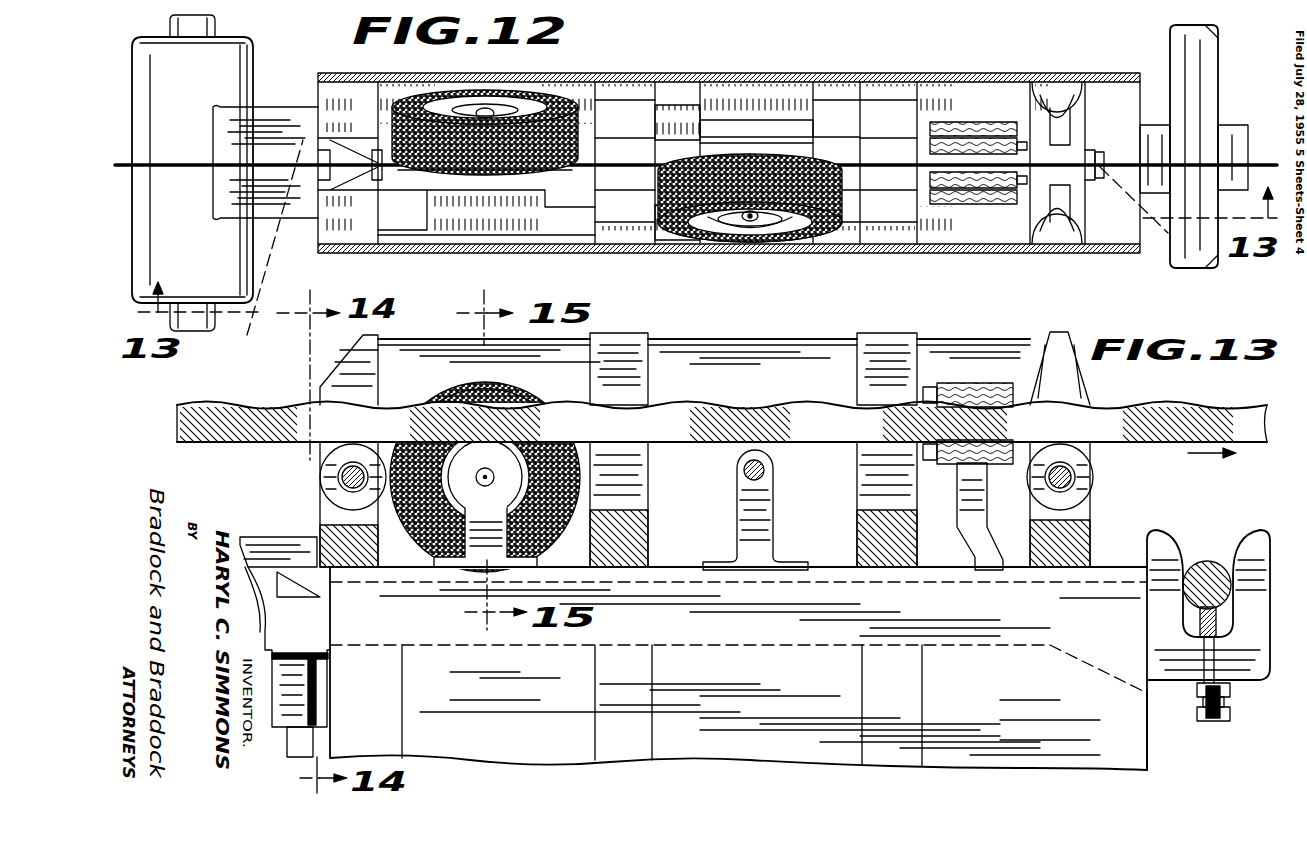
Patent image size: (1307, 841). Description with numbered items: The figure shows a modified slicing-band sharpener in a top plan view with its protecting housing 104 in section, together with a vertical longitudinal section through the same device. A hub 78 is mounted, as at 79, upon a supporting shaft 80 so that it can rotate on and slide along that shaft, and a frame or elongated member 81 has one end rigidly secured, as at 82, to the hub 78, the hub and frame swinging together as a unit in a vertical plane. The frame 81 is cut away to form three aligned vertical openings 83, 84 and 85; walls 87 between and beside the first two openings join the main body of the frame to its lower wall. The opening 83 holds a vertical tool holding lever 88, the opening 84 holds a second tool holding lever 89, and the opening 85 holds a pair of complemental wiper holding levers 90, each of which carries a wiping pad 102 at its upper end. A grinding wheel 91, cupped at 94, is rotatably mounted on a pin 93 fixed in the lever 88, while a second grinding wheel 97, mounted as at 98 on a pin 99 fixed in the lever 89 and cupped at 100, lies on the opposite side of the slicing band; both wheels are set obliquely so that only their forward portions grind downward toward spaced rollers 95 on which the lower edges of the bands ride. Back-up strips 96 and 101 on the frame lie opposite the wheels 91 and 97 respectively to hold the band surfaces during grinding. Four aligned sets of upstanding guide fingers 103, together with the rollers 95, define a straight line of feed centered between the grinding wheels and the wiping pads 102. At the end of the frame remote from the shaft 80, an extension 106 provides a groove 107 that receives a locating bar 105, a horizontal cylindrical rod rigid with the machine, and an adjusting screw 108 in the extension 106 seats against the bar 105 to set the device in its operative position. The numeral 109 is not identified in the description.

In FIG. 12, the hub 78 is at (248, 80).
In FIG. 12, the mounting of hub 79 is at (213, 26).
In FIG. 12, the supporting shaft 80 is at (202, 336).
In FIG. 12, the frame or elongated member 81 is at (528, 225).
In FIG. 13, the rigid securement of frame to hub 82 is at (300, 537).
In FIG. 12, the vertical opening 83 is at (495, 200).
In FIG. 12, the vertical opening 84 is at (790, 124).
In FIG. 12, the vertical opening 85 is at (965, 120).
In FIG. 13, the walls 87 is at (380, 605).
In FIG. 13, the tool holding lever 88 is at (508, 520).
In FIG. 13, the tool holding lever 89 is at (775, 505).
In FIG. 13, the wiper holding lever 90 is at (988, 506).
In FIG. 13, the grinding wheel 91 is at (520, 396).
In FIG. 12, the pin 93 is at (486, 108).
In FIG. 13, the pin 93 is at (497, 476).
In FIG. 12, the central recess or cup 94 is at (522, 100).
In FIG. 13, the central recess or cup 94 is at (455, 473).
In FIG. 12, the rollers 95 is at (378, 170).
In FIG. 13, the rollers 95 is at (320, 478).
In FIG. 12, the back-up strip 96 is at (458, 185).
In FIG. 12, the grinding wheel 97 is at (816, 232).
In FIG. 12, the rotatable mounting of grinding wheel 98 is at (745, 230).
In FIG. 12, the pin 99 is at (752, 224).
In FIG. 13, the pin 99 is at (766, 472).
In FIG. 12, the central recess or cup 100 is at (760, 226).
In FIG. 12, the back-up strip 101 is at (712, 143).
In FIG. 13, the back-up strip 101 is at (762, 404).
In FIG. 12, the wiping pad 102 is at (985, 160).
In FIG. 13, the wiping pad 102 is at (968, 423).
In FIG. 12, the guide fingers 103 is at (320, 147).
In FIG. 12, the protecting housing 104 is at (671, 73).
In FIG. 12, the locating bar 105 is at (1200, 100).
In FIG. 13, the locating bar 105 is at (1210, 565).
In FIG. 12, the extension 106 is at (1236, 133).
In FIG. 13, the extension 106 is at (1150, 590).
In FIG. 12, the groove 107 is at (1170, 126).
In FIG. 13, the groove 107 is at (1192, 562).
In FIG. 13, the adjusting screw 108 is at (1230, 704).
In FIG. 13, the base flange 109 is at (1120, 746).